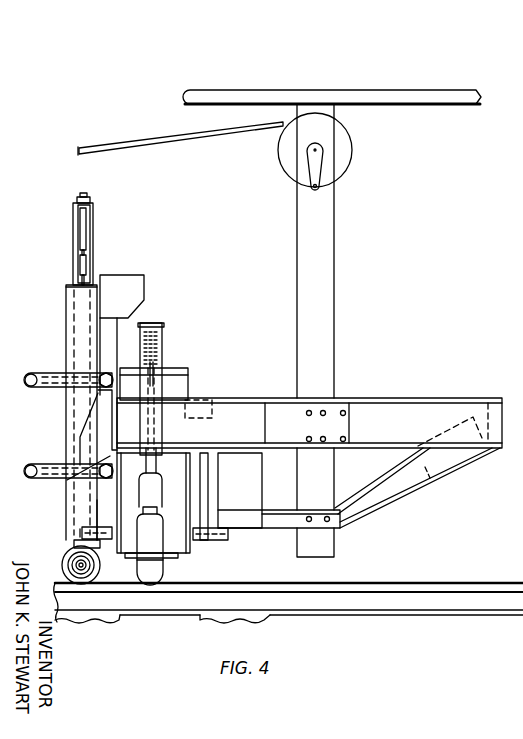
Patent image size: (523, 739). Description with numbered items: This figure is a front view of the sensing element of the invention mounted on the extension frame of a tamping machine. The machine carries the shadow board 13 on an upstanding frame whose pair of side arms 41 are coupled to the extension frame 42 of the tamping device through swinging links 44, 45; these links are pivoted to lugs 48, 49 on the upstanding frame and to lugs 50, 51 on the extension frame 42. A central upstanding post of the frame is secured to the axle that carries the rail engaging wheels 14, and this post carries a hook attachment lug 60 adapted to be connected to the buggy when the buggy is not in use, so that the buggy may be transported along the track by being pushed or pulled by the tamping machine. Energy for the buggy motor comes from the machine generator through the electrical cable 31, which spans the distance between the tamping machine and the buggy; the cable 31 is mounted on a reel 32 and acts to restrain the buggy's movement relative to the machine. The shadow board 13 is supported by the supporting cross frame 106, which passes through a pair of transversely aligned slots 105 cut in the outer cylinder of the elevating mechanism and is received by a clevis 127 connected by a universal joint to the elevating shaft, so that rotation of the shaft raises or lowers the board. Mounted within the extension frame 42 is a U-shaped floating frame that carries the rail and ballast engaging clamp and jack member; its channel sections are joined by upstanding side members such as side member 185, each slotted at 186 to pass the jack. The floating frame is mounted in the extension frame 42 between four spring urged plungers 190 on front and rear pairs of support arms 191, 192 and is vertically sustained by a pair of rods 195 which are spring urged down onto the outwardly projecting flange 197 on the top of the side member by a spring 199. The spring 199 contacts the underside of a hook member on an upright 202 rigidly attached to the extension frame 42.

The shadow board 13 is at (94, 198).
The rail engaging wheels 14 is at (62, 565).
The electrical cable 31 is at (166, 143).
The reel 32 is at (343, 141).
The side arms 41 is at (74, 306).
The extension frame 42 is at (246, 415).
The swinging link 44 is at (54, 372).
The swinging link 45 is at (55, 462).
The lug 48 is at (33, 373).
The lug 49 is at (34, 470).
The lug 50 is at (98, 398).
The lug 51 is at (70, 474).
The hook attachment lug 60 is at (80, 533).
The transversely aligned slots 105 is at (90, 262).
The supporting cross frame 106 is at (80, 236).
The clevis 127 is at (80, 259).
The upstanding side member 185 is at (178, 392).
The slot 186 is at (168, 497).
The spring urged plungers 190 is at (227, 537).
The support arms 191 is at (87, 508).
The support arms 192 is at (205, 497).
The rods 195 is at (152, 372).
The outwardly projecting flange 197 is at (172, 376).
The spring 199 is at (152, 332).
The uprights 202 is at (160, 431).